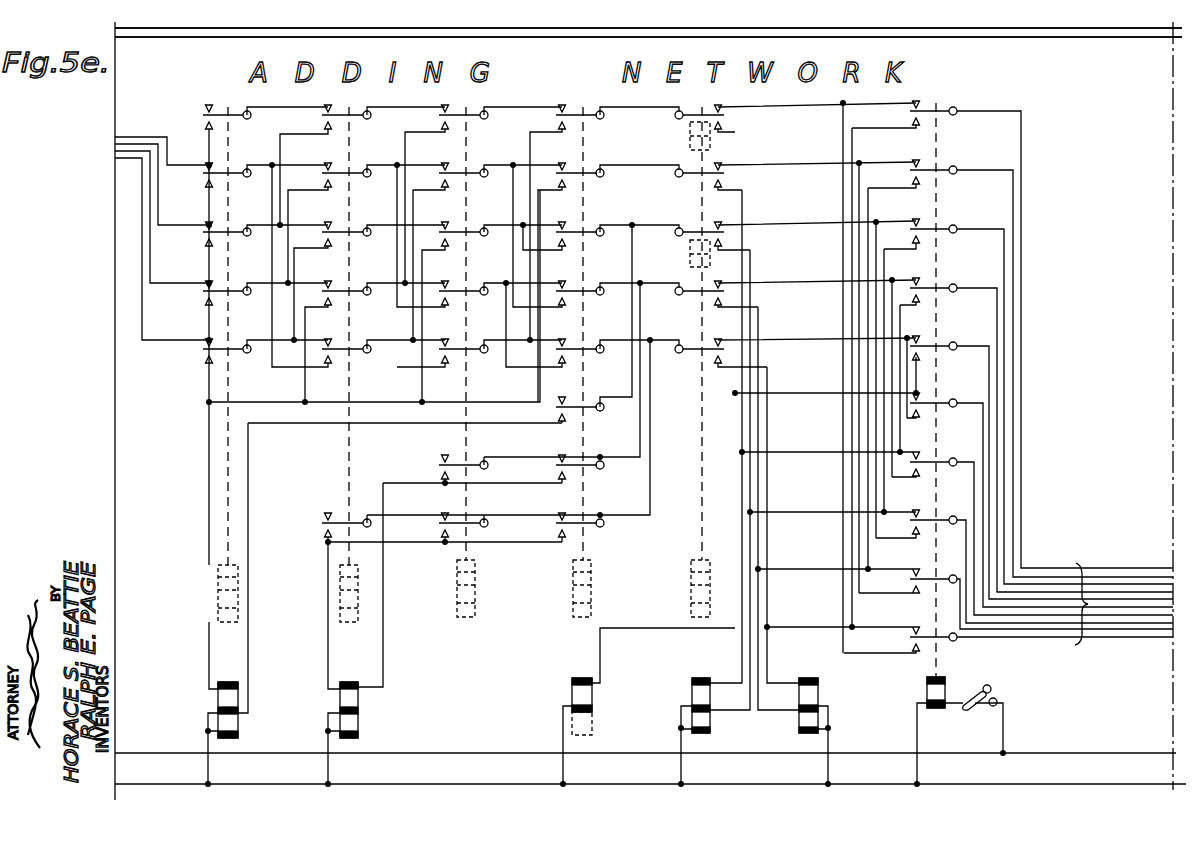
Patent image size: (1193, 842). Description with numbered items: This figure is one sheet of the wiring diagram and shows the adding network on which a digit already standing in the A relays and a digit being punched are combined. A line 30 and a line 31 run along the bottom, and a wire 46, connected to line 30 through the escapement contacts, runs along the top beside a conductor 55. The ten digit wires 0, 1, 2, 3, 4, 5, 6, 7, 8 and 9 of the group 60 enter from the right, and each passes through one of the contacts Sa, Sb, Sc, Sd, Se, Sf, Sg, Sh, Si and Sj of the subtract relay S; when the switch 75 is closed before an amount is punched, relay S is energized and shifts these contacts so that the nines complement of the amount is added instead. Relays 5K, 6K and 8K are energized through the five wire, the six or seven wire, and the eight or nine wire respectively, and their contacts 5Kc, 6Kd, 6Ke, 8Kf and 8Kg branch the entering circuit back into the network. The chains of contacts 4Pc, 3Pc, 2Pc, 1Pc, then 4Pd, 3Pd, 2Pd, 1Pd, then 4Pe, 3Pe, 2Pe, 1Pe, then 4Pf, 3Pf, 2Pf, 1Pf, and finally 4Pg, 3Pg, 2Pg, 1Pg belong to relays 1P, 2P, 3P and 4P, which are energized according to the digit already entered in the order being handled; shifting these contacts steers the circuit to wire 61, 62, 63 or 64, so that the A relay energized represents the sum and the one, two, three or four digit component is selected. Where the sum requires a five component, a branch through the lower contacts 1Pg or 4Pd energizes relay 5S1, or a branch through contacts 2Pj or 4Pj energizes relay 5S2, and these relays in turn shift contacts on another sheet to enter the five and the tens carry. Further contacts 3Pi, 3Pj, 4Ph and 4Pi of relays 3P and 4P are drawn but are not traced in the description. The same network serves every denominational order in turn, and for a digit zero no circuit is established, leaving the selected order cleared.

The wire 46 is at (505, 27).
The adding network frame conductor 55 is at (990, 33).
The group of digit wires 60 is at (1058, 386).
The wire 61 is at (183, 163).
The wire 62 is at (180, 226).
The wire 63 is at (176, 284).
The wire 64 is at (172, 342).
The switch 75 is at (997, 694).
The line 30 is at (1075, 752).
The line 31 is at (960, 783).
The relay 1P is at (240, 582).
The relay 2P is at (360, 582).
The relay 3P is at (477, 577).
The relay 4P is at (593, 580).
The relay 5K is at (688, 138).
The relay 6K is at (688, 257).
The relay 8K is at (690, 585).
The relay 5S1 is at (240, 700).
The relay 5S2 is at (348, 688).
The relay S is at (926, 690).
The contacts 1Pc is at (205, 113).
The contacts 1Pd is at (204, 185).
The contacts 1Pe is at (204, 244).
The contacts 1Pf is at (204, 302).
The contacts 1Pg is at (204, 360).
The contacts 2Pc is at (322, 124).
The contacts 2Pd is at (322, 182).
The contacts 2Pe is at (324, 228).
The contacts 2Pf is at (326, 286).
The contacts 2Pg is at (330, 345).
The contacts 2Pj is at (322, 525).
The contacts 3Pc is at (438, 122).
The contacts 3Pd is at (450, 170).
The contacts 3Pe is at (452, 229).
The contacts 3Pf is at (454, 286).
The contacts 3Pg is at (456, 345).
The relay 3P contact i 3Pi is at (440, 474).
The relay 3P contact j 3Pj is at (440, 526).
The contacts 4Pc is at (555, 122).
The contacts 4Pd is at (568, 165).
The contacts 4Pe is at (570, 224).
The contacts 4Pf is at (570, 284).
The contacts 4Pg is at (574, 342).
The relay 4P contact h 4Ph is at (556, 412).
The relay 4P contact i 4Pi is at (556, 470).
The contacts 4Pj is at (556, 528).
The contacts 5Kc is at (724, 123).
The contacts 6Kd is at (724, 180).
The contacts 6Ke is at (724, 240).
The contacts 8Kf is at (724, 299).
The contacts 8Kg is at (724, 357).
The contacts Sa is at (910, 120).
The contacts Sb is at (910, 178).
The contacts Sc is at (910, 237).
The contacts Sd is at (918, 281).
The contacts Se is at (922, 337).
The contacts Sf is at (922, 412).
The contacts Sg is at (922, 470).
The contacts Sh is at (910, 531).
The contacts Si is at (910, 586).
The contacts Sj is at (910, 645).
The zero digit wire 0 is at (1019, 136).
The one digit wire 1 is at (1012, 192).
The two digit wire 2 is at (1003, 251).
The three digit wire 3 is at (996, 313).
The four digit wire 4 is at (988, 371).
The five digit wire 5 is at (982, 443).
The six digit wire 6 is at (973, 506).
The seven digit wire 7 is at (965, 557).
The eight digit wire 8 is at (959, 607).
The nine digit wire 9 is at (974, 638).